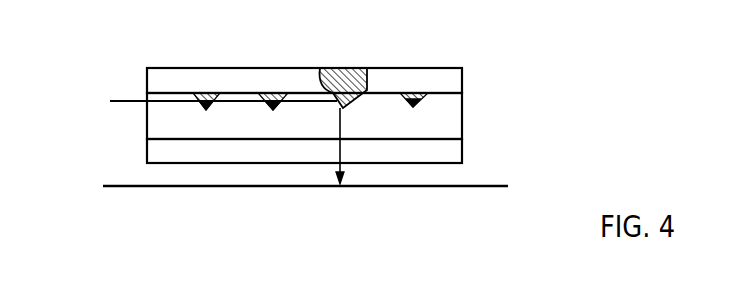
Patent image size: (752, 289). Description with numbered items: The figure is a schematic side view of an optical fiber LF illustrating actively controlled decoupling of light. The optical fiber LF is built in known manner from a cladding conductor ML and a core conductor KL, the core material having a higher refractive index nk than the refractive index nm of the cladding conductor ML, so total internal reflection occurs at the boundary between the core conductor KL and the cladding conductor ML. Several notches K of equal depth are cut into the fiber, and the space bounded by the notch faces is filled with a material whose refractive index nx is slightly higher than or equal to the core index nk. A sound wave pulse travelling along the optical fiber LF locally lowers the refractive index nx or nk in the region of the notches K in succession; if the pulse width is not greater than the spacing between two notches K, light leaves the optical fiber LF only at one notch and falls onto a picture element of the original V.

The cladding conductor ML is at (147, 80).
The core conductor KL is at (150, 121).
The optical fiber LF is at (462, 106).
The refractive index of notch filling material nx is at (208, 93).
The notches K is at (413, 93).
The refractive index of cladding conductor nm is at (462, 80).
The refractive index of core conductor nk is at (462, 122).
The original V is at (481, 190).